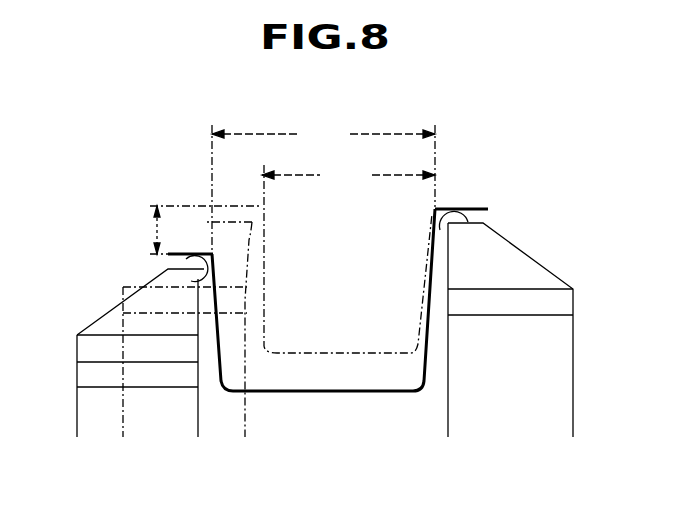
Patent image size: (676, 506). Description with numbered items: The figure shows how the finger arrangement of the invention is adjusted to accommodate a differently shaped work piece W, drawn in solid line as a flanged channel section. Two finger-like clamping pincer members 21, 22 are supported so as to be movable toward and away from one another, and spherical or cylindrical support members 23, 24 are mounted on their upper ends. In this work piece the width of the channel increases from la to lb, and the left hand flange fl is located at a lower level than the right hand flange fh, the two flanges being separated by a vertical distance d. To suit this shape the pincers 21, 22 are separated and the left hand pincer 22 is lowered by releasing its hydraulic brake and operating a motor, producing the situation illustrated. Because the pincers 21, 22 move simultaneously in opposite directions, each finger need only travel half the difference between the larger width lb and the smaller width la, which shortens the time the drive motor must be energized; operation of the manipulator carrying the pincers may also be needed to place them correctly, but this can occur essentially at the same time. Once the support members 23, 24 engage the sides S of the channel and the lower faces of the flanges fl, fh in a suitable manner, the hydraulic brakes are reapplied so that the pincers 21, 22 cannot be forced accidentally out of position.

The clamping pincer member 21 is at (573, 327).
The clamping pincer member 22 is at (76, 366).
The support member 23 is at (493, 212).
The support member 24 is at (180, 257).
The work piece W is at (324, 392).
The sides of the channel section S is at (427, 287).
The increased channel width lb is at (323, 188).
The original channel width la is at (348, 175).
The vertical distance between flanges d is at (196, 230).
The left hand flange fl is at (187, 252).
The right hand flange fh is at (473, 205).